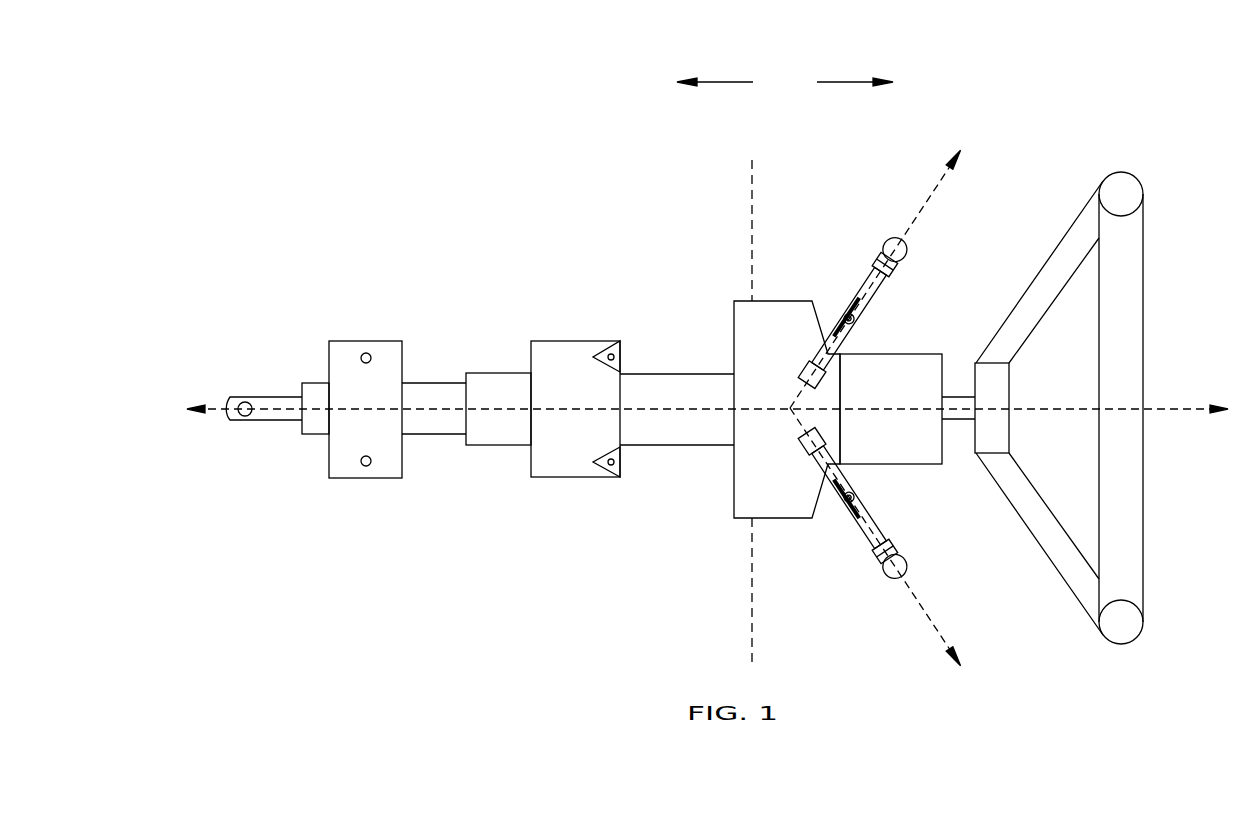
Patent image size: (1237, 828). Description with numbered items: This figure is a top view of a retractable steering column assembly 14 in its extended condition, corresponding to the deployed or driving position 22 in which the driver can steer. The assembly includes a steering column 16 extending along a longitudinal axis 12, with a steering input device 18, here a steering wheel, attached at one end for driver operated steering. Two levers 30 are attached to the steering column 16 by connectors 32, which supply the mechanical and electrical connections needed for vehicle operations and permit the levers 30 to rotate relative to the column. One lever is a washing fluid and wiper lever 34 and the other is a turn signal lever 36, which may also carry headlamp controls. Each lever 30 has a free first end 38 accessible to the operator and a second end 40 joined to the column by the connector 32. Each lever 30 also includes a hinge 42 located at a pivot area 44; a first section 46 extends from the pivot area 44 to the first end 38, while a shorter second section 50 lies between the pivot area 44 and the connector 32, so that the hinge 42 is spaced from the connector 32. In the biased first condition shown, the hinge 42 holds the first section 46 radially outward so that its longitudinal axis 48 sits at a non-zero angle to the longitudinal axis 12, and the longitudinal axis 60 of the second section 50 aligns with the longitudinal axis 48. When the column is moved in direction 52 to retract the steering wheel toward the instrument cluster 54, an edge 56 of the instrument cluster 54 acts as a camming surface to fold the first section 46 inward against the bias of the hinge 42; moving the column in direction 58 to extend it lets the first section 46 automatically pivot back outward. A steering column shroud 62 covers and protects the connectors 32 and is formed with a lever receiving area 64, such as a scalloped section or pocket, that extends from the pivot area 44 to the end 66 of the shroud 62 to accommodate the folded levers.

The longitudinal axis 12 is at (1055, 410).
The steering column assembly 14 is at (640, 256).
The steering column 16 is at (498, 447).
The steering input device 18 is at (1124, 274).
The driving position 22 is at (1036, 180).
The lever 30 is at (859, 414).
The connector 32 is at (815, 378).
The washing fluid and wiper lever 34 is at (887, 243).
The turn signal lever 36 is at (878, 573).
The first end 38 is at (912, 245).
The second end 40 is at (808, 360).
The hinge 42 is at (857, 318).
The pivot area 44 is at (845, 315).
The first section 46 is at (887, 285).
The longitudinal axis of the first section 48 is at (937, 630).
The second section 50 is at (830, 353).
The direction 52 is at (722, 82).
The instrument cluster 54 is at (750, 177).
The edge 56 is at (752, 298).
The direction 58 is at (848, 82).
The longitudinal axis of the second section 60 is at (815, 430).
The steering column shroud 62 is at (742, 453).
The lever receiving area 64 is at (930, 352).
The end of the shroud 66 is at (944, 381).